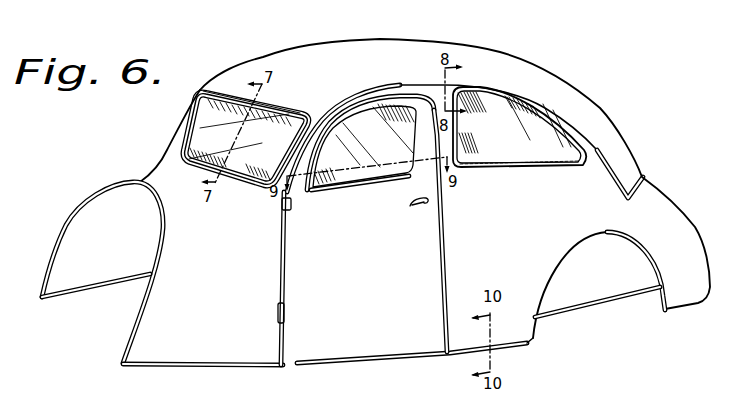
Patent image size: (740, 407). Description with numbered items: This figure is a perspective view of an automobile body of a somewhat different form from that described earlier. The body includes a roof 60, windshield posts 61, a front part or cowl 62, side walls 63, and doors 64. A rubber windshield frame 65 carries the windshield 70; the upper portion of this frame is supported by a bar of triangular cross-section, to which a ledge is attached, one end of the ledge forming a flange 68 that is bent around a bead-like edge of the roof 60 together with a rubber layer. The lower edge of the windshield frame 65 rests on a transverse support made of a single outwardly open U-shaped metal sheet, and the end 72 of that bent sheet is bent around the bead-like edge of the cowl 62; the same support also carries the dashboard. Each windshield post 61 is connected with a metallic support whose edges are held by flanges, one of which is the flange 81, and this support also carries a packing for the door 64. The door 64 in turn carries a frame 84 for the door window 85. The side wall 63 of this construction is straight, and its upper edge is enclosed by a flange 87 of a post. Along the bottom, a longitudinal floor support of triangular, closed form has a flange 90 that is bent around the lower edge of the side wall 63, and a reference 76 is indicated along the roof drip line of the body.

The roof 60 is at (463, 57).
The windshield post 61 is at (192, 109).
The front part or cowl 62 is at (185, 347).
The side wall 63 is at (543, 257).
The door 64 is at (370, 340).
The windshield frame 65 is at (300, 113).
The flange 68 is at (219, 95).
The windshield 70 is at (203, 126).
The end of the bent sheet 72 is at (234, 176).
The roof drip molding 76 is at (421, 88).
The flange 81 is at (297, 137).
The frame 84 is at (416, 150).
The door window 85 is at (388, 168).
The flange 87 is at (446, 228).
The flange 90 is at (522, 343).